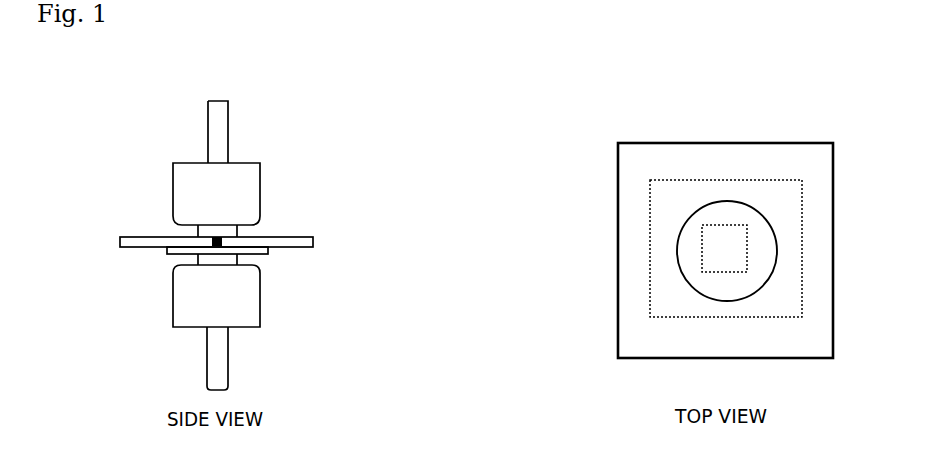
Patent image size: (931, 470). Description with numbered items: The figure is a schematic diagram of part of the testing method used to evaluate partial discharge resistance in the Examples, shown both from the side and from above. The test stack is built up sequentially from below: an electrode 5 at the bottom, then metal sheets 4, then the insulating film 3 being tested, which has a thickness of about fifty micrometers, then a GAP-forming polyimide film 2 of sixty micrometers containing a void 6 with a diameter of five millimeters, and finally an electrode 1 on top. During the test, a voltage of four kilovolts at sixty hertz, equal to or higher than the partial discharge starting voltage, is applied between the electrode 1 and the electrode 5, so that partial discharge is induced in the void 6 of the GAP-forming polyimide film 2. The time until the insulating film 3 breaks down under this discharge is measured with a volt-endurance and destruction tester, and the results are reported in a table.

The electrode 1 is at (690, 213).
The GAP-forming polyimide film 2 is at (618, 249).
The insulating film 3 is at (650, 298).
The metal sheets 4 is at (702, 252).
The electrode 5 is at (260, 297).
The void 6 is at (213, 249).